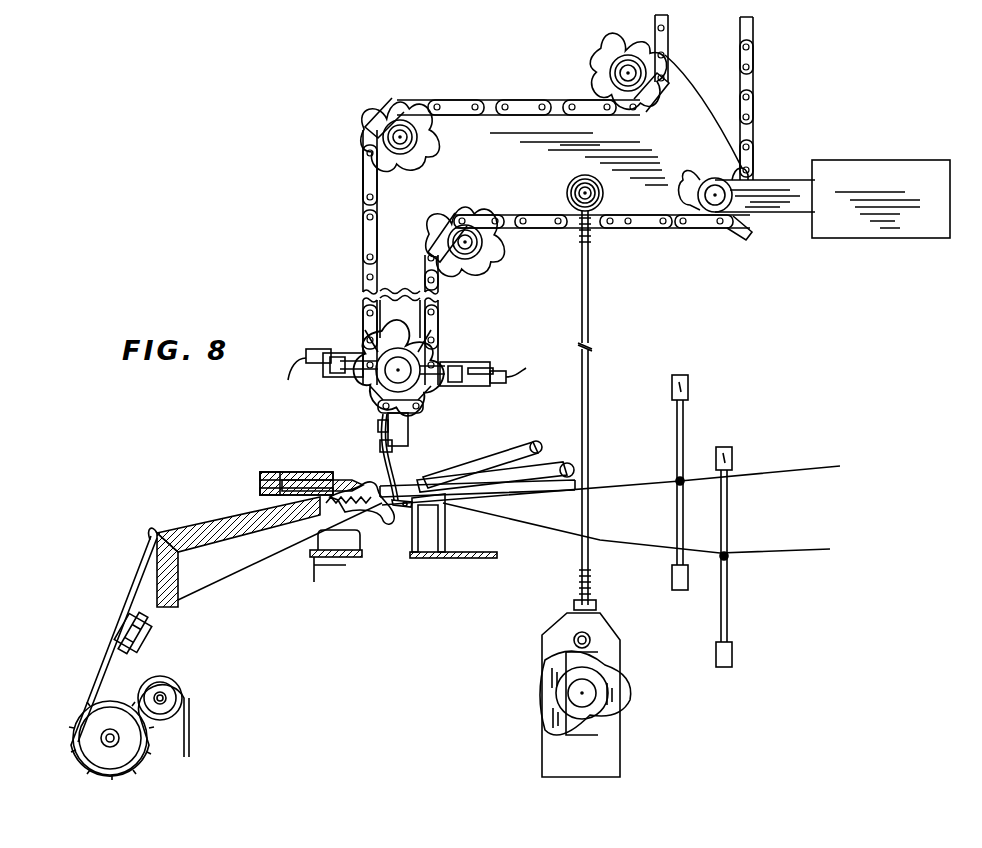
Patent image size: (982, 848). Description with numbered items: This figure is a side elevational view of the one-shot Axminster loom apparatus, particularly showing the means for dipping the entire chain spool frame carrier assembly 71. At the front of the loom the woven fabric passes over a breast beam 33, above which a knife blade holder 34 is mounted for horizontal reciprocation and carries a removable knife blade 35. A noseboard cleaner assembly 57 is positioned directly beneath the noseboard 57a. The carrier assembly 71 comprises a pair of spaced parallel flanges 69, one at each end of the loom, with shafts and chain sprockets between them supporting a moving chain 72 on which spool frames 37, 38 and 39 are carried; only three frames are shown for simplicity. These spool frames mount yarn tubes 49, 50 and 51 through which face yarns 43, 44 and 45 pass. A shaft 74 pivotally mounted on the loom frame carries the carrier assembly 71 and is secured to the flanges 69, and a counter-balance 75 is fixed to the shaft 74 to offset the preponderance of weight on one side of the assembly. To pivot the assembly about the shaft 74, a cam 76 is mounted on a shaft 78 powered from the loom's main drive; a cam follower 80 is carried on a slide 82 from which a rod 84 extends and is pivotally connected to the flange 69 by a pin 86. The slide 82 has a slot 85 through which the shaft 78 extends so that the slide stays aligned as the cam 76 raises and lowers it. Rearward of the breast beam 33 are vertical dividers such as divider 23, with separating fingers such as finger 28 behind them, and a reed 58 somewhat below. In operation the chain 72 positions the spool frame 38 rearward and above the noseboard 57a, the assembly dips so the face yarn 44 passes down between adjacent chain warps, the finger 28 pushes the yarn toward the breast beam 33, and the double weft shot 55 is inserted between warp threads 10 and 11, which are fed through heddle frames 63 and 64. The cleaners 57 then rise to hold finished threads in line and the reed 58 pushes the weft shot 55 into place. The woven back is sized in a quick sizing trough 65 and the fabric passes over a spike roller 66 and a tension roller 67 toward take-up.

The warp thread 10 is at (630, 485).
The warp thread 11 is at (625, 541).
The vertical divider 23 is at (500, 472).
The separating finger 28 is at (453, 474).
The breast beam 33 is at (240, 533).
The knife blade holder 34 is at (302, 477).
The knife blade 35 is at (340, 479).
The spool frame 37 is at (356, 360).
The spool frame 38 is at (420, 406).
The spool frame 39 is at (448, 366).
The face yarn 43 is at (288, 380).
The face yarn 44 is at (403, 480).
The face yarn 45 is at (521, 372).
The yarn tube 49 is at (312, 353).
The yarn tube 50 is at (389, 457).
The yarn tube 51 is at (485, 369).
The double weft shot 55 is at (402, 509).
The noseboard cleaner assembly 57 is at (346, 555).
The noseboard 57a is at (370, 525).
The reed 58 is at (445, 541).
The heddle frame 63 is at (683, 430).
The heddle frame 64 is at (728, 519).
The quick sizing trough 65 is at (154, 638).
The spike roller 66 is at (110, 733).
The tension roller 67 is at (168, 698).
The flange 69 is at (506, 174).
The chain spool frame carrier assembly 71 is at (354, 198).
The moving chain 72 is at (368, 233).
The shaft 74 is at (700, 195).
The counter-balance 75 is at (870, 178).
The cam 76 is at (628, 695).
The shaft 78 is at (570, 695).
The cam follower 80 is at (590, 646).
The slide 82 is at (616, 661).
The rod 84 is at (590, 362).
The slot 85 is at (612, 727).
The pin 86 is at (600, 190).